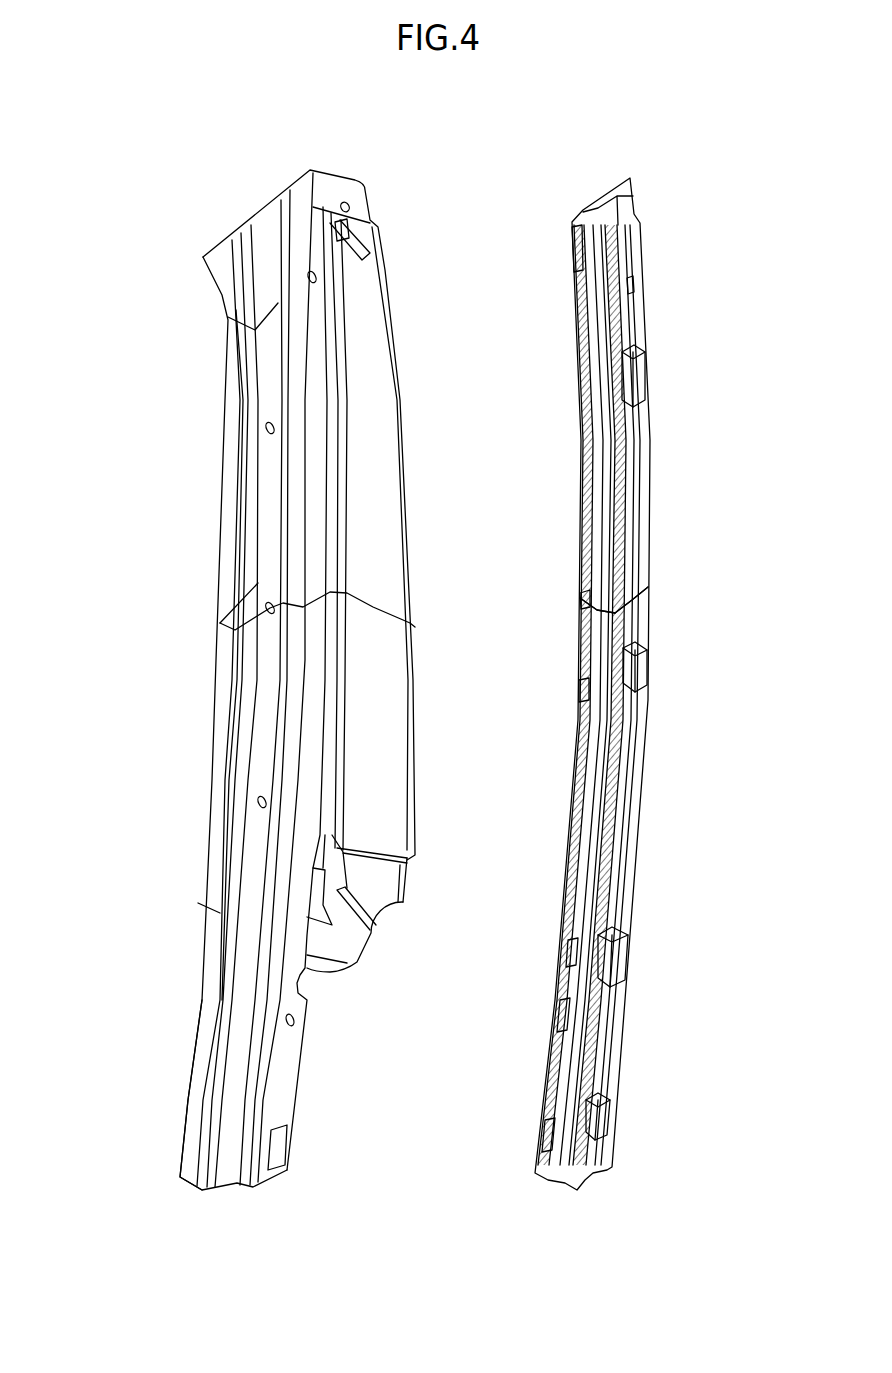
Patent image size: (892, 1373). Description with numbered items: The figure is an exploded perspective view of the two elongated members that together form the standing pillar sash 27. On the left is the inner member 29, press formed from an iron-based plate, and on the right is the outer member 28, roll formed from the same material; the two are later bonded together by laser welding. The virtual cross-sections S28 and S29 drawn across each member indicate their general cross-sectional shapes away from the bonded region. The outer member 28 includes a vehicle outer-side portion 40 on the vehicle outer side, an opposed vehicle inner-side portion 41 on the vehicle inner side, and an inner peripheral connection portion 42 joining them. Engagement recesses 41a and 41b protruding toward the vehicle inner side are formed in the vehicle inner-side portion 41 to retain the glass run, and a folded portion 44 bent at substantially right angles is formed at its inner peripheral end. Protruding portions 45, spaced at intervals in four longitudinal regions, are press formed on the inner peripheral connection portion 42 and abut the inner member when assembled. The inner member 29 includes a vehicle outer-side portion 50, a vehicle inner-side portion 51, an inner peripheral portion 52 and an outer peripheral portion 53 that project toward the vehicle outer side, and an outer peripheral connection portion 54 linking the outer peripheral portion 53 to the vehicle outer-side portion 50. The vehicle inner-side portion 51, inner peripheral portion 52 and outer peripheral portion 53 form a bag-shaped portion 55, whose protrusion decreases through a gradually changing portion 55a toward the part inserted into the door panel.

The standing pillar sash 27 is at (504, 169).
The outer member 28 is at (575, 211).
The inner member 29 is at (376, 218).
The vehicle outer-side portion 40 is at (637, 488).
The vehicle inner-side portion 41 is at (606, 538).
The engagement recess 41a is at (580, 600).
The engagement recess 41b is at (628, 617).
The inner peripheral connection portion 42 is at (633, 740).
The folded portion 44 is at (578, 753).
The protruding portions 45 is at (650, 380).
The vehicle outer-side portion 50 is at (365, 383).
The vehicle inner-side portion 51 is at (218, 706).
The inner peripheral portion 52 is at (215, 674).
The outer peripheral portion 53 is at (258, 745).
The outer peripheral connection portion 54 is at (318, 457).
The bag-shaped portion 55 is at (162, 748).
The gradually changing portion 55a is at (203, 987).
The virtual cross-section of the outer member S28 is at (648, 586).
The virtual cross-section of the inner member S29 is at (380, 604).